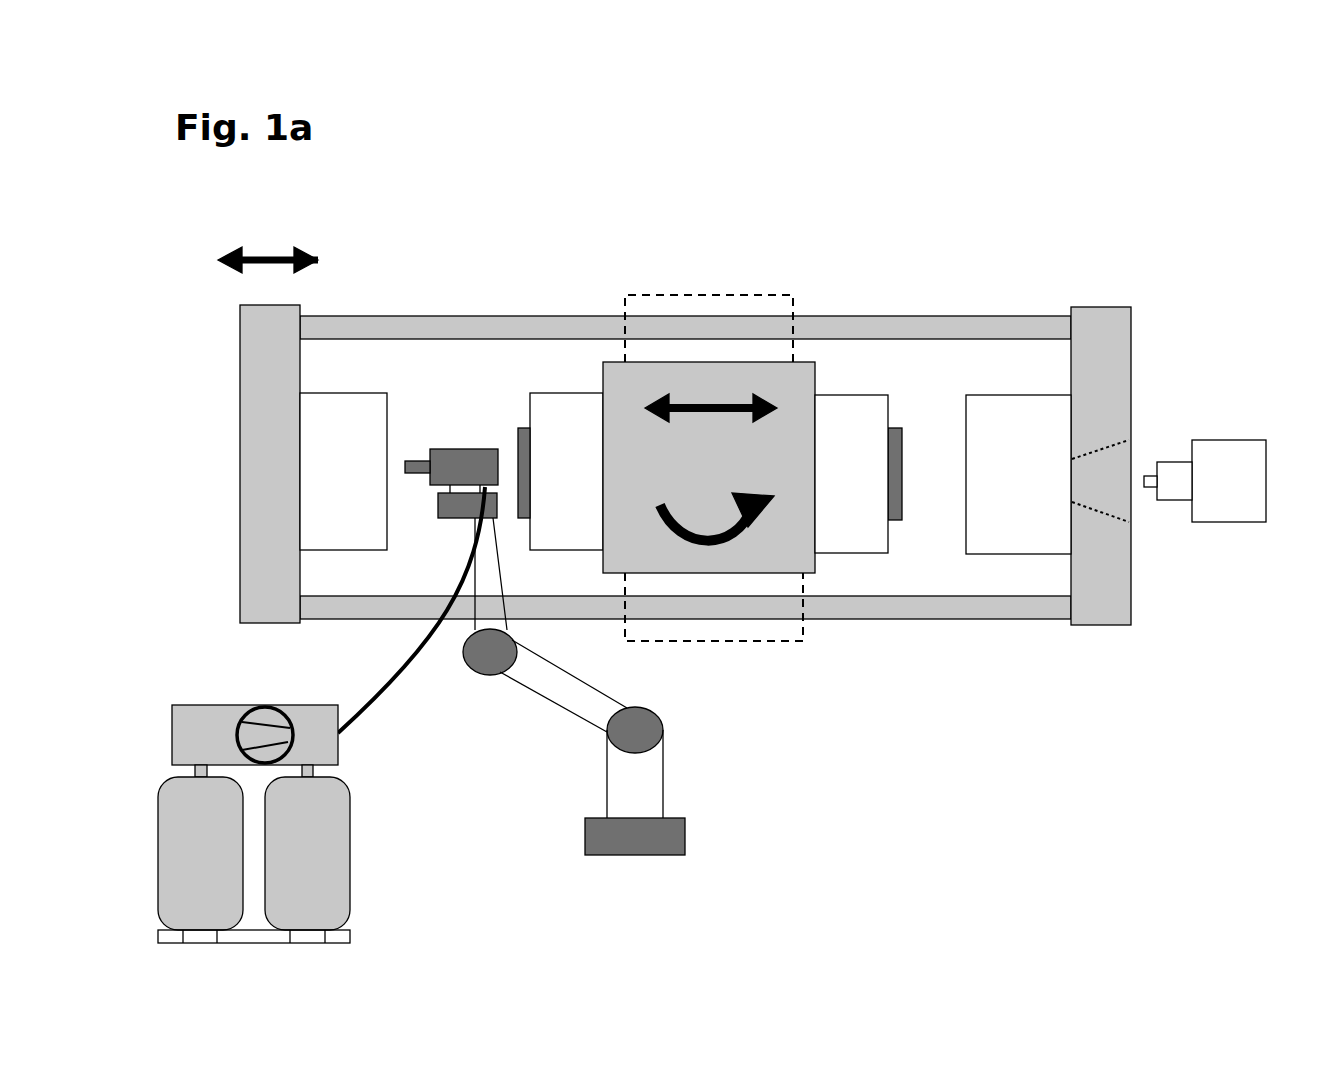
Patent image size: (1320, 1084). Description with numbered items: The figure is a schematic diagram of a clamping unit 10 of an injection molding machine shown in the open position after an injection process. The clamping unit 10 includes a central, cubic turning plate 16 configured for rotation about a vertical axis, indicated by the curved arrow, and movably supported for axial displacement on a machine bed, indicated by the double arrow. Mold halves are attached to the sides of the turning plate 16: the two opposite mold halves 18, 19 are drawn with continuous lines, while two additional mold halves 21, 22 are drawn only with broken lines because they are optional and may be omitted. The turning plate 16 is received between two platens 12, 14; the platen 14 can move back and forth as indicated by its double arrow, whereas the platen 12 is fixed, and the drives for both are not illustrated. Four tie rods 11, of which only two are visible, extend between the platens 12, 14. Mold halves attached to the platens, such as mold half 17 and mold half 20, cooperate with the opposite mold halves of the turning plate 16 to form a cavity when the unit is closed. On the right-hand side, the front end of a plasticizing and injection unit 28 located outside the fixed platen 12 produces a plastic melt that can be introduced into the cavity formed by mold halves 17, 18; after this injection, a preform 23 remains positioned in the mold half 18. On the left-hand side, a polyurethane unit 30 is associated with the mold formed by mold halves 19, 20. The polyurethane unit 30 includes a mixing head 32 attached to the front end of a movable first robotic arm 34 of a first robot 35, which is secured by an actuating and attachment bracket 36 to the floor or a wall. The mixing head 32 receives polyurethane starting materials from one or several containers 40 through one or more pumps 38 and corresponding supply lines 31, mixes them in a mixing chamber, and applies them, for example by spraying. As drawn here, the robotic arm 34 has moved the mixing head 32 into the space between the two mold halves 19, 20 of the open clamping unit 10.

The clamping unit 10 is at (697, 437).
The tie rods 11 is at (888, 330).
The platen 12 is at (1114, 609).
The platen 14 is at (265, 382).
The central turning plate 16 is at (788, 542).
The mold half 17 is at (999, 419).
The mold half 18 is at (843, 428).
The mold half 19 is at (555, 417).
The mold half 20 is at (365, 415).
The mold half 21 is at (700, 305).
The mold half 22 is at (765, 632).
The preform 23 is at (515, 430).
The plasticizing and injection unit 28 is at (1237, 498).
The polyurethane unit 30 is at (462, 653).
The supply lines 31 is at (375, 707).
The mixing head 32 is at (442, 460).
The first robotic arm 34 is at (463, 528).
The first robot 35 is at (642, 773).
The actuating and attachment bracket 36 is at (632, 718).
The pump 38 is at (262, 717).
The containers 40 is at (217, 863).